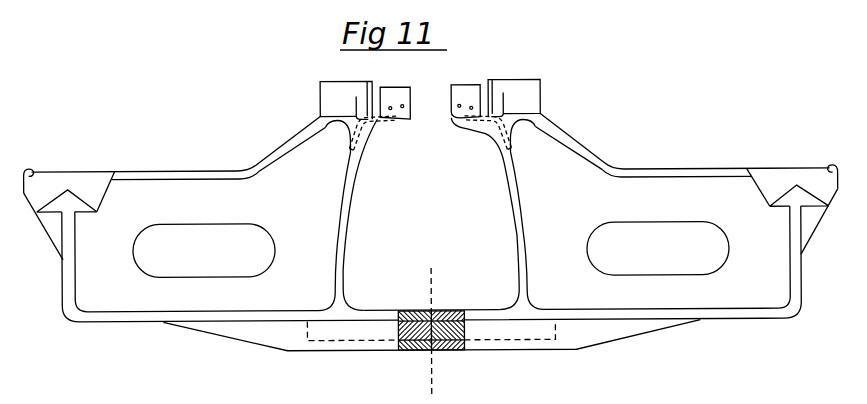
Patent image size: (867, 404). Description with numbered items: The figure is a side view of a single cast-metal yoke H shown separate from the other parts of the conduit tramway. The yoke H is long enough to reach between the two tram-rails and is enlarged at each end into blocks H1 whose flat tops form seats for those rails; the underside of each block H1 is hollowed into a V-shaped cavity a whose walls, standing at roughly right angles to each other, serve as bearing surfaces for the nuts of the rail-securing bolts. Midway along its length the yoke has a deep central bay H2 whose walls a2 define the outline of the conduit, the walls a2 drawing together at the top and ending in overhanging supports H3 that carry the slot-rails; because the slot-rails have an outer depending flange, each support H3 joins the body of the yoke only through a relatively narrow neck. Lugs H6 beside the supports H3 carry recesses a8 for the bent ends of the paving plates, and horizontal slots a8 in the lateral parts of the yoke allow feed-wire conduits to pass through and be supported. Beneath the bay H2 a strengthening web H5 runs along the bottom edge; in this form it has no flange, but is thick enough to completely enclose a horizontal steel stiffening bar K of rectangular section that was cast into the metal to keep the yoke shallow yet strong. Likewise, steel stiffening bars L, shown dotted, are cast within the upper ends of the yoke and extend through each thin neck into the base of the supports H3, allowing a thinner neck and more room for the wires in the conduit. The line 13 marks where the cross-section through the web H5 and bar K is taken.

The yoke H is at (218, 158).
The enlarged end blocks H1 is at (88, 183).
The central bay H2 is at (431, 272).
The overhanging supports H3 is at (403, 117).
The strengthening web H5 is at (513, 342).
The lugs H6 is at (503, 99).
The V-shaped cavity a is at (73, 210).
The walls of the bay a2 is at (355, 195).
The slots or openings a8 is at (360, 102).
The stiffening bar K is at (416, 340).
The stiffening bars L is at (364, 136).
The section line 13 is at (429, 332).